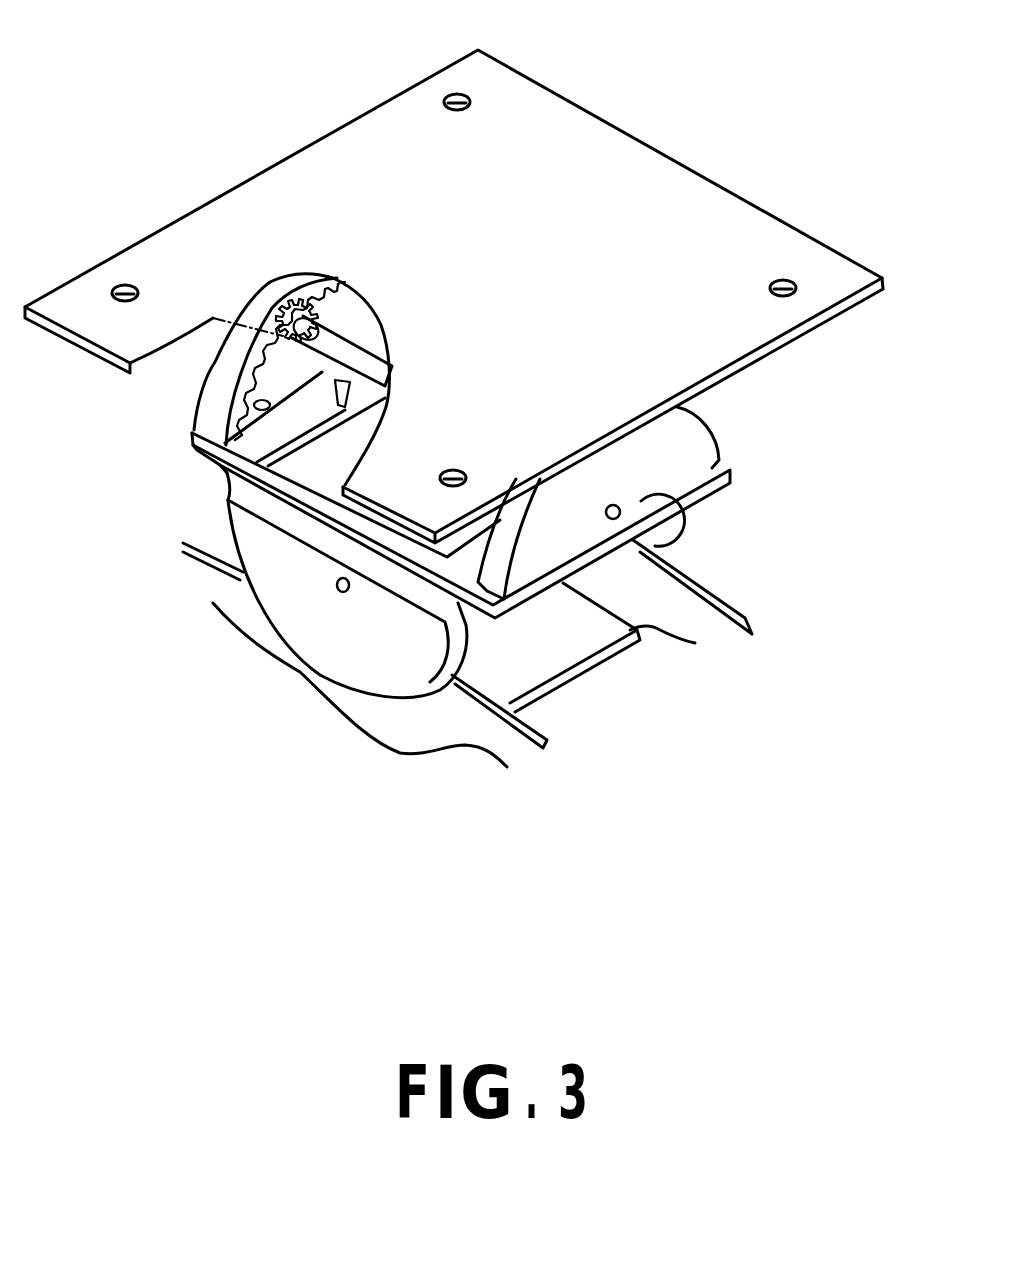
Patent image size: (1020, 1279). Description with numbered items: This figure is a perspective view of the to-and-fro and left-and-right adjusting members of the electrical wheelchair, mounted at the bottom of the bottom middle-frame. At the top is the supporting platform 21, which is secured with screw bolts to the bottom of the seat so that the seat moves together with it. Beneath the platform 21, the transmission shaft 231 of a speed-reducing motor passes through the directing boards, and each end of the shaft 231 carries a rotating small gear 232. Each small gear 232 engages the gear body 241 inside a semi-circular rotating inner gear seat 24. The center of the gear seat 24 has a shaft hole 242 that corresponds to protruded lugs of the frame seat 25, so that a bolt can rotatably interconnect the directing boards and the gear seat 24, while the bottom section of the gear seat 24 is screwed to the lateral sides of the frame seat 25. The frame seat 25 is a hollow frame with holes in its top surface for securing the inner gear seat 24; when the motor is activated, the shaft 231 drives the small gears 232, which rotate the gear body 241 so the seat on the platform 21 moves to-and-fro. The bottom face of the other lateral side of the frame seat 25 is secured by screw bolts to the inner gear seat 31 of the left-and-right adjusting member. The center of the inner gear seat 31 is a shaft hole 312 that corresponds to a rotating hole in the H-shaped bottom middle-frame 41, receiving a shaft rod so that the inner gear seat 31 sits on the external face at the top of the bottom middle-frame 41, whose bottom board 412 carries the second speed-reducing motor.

The supporting platform 21 is at (597, 145).
The transmission shaft 231 is at (338, 285).
The rotating small gear 232 is at (283, 310).
The semi-circular rotating inner gear seat 24 is at (697, 448).
The gear body 241 is at (238, 378).
The shaft hole 242 is at (680, 500).
The frame seat 25 is at (242, 474).
The inner gear seat 31 is at (327, 633).
The shaft hole 312 is at (335, 588).
The H-shaped bottom middle-frame 41 is at (743, 614).
The bottom board 412 is at (582, 645).